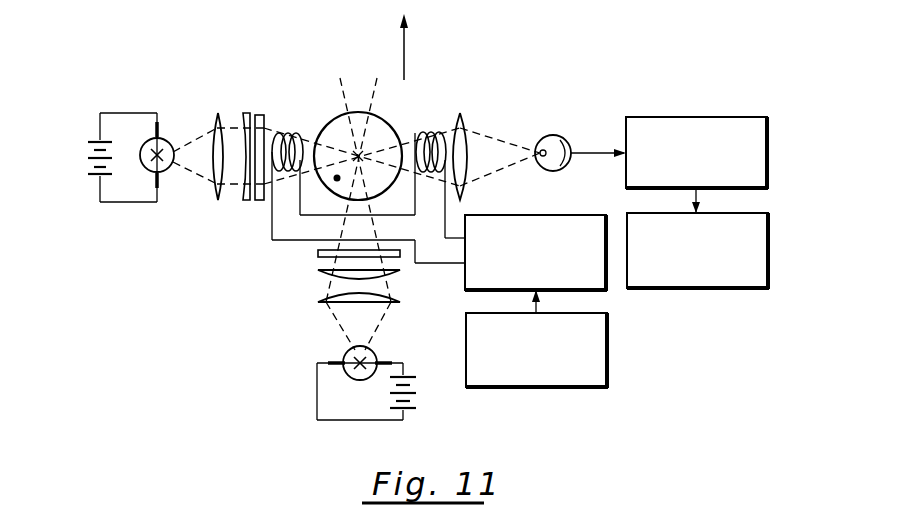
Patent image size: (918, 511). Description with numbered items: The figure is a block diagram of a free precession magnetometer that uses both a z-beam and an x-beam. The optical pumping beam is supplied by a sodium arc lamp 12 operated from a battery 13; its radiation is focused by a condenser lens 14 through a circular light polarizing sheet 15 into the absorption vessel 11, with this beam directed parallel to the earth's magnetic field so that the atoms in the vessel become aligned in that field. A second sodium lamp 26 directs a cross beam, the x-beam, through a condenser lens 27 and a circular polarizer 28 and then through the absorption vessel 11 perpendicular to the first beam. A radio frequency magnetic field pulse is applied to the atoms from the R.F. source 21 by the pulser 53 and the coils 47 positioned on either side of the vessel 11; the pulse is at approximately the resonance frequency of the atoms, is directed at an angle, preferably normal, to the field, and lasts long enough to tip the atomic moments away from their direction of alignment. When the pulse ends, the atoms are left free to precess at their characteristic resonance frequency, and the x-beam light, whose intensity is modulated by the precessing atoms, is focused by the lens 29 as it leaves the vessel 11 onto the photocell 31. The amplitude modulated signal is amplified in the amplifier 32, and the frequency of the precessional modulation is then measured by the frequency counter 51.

The absorption vessel 11 is at (386, 128).
The sodium arc lamp 12 is at (347, 352).
The battery 13 is at (420, 392).
The condenser lens 14 is at (322, 280).
The circular light polarizing sheet 15 is at (318, 254).
The R.F. source 21 is at (597, 349).
The second sodium lamp 26 is at (166, 142).
The condenser lens 27 is at (244, 114).
The circular polarizer 28 is at (265, 115).
The lens 29 is at (466, 118).
The photocell 31 is at (556, 138).
The amplifier 32 is at (693, 117).
The coils 47 is at (286, 133).
The frequency counter 51 is at (762, 250).
The pulser 53 is at (533, 215).